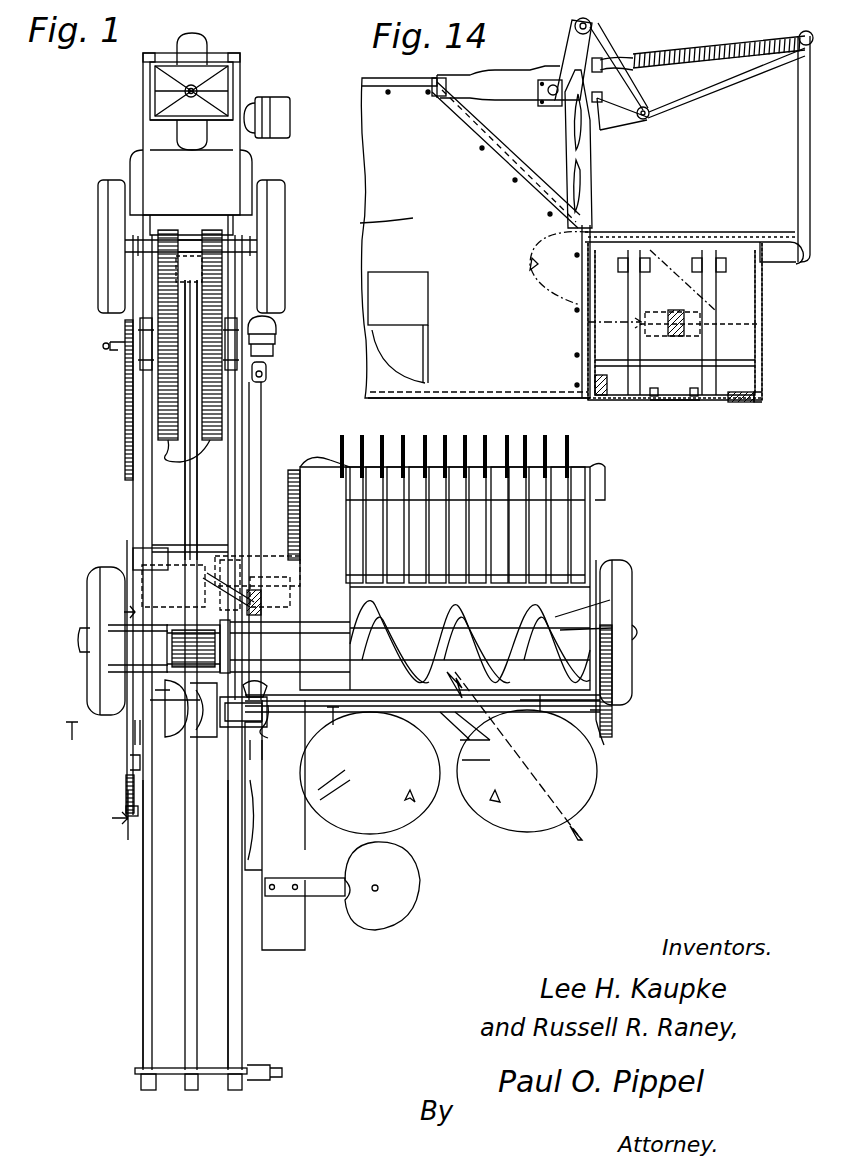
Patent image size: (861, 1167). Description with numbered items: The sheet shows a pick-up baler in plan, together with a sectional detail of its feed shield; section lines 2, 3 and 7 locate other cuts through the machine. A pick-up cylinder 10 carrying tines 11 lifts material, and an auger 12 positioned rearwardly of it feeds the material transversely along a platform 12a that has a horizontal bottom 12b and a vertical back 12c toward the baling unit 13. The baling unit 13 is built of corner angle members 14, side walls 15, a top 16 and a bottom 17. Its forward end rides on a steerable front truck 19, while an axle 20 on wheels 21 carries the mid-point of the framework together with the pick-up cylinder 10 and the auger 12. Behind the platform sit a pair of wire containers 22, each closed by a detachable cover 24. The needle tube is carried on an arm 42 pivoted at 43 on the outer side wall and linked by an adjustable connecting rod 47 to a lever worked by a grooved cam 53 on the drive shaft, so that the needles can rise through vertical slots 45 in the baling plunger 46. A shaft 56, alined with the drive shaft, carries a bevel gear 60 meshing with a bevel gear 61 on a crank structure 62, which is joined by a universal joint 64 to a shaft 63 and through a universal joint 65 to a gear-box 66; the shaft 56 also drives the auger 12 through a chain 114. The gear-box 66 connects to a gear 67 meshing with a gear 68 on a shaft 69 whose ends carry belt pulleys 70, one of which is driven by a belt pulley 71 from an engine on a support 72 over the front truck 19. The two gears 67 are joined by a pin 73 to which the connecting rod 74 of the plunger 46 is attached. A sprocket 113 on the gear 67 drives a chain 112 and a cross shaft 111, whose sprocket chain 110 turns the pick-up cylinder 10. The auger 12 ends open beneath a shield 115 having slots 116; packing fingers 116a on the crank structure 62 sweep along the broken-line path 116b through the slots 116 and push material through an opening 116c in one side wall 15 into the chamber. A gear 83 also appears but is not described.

In FIG. 1, the section line 2 is at (115, 723).
In FIG. 1, the section line 3 is at (202, 734).
In FIG. 1, the section line 7 is at (516, 757).
In FIG. 1, the pick-up cylinder 10 is at (587, 455).
In FIG. 1, the tines 11 is at (465, 435).
In FIG. 1, the auger 12 is at (465, 628).
In FIG. 1, the platform 12a is at (583, 608).
In FIG. 14, the platform 12a is at (372, 200).
In FIG. 1, the horizontal bottom 12b is at (620, 625).
In FIG. 14, the horizontal bottom 12b is at (455, 396).
In FIG. 1, the vertical back 12c is at (512, 695).
In FIG. 14, the vertical back 12c is at (415, 215).
In FIG. 1, the baling unit 13 is at (162, 513).
In FIG. 1, the corner angle members 14 is at (150, 958).
In FIG. 14, the corner angle members 14 is at (766, 266).
In FIG. 14, the side walls 15 is at (760, 335).
In FIG. 1, the top 16 is at (130, 596).
In FIG. 14, the top 16 is at (733, 235).
In FIG. 14, the bottom 17 is at (685, 400).
In FIG. 1, the steerable front truck 19 is at (210, 50).
In FIG. 1, the axle 20 is at (76, 640).
In FIG. 1, the wheels 21 is at (88, 676).
In FIG. 1, the containers 22 is at (455, 828).
In FIG. 1, the detachable cover 24 is at (395, 815).
In FIG. 1, the arm 42 is at (126, 790).
In FIG. 1, the pivot 43 is at (130, 816).
In FIG. 1, the vertical slots 45 is at (128, 565).
In FIG. 1, the baling plunger 46 is at (148, 548).
In FIG. 14, the baling plunger 46 is at (735, 305).
In FIG. 1, the adjustable connecting rod 47 is at (130, 766).
In FIG. 1, the cam 53 is at (134, 745).
In FIG. 1, the shaft 56 is at (520, 700).
In FIG. 1, the bevel gear 60 is at (254, 720).
In FIG. 1, the bevel gear 61 is at (268, 690).
In FIG. 1, the crank structure 62 is at (242, 660).
In FIG. 14, the crank structure 62 is at (540, 54).
In FIG. 1, the shaft 63 is at (260, 456).
In FIG. 1, the universal joint 64 is at (258, 600).
In FIG. 1, the universal joint 65 is at (268, 374).
In FIG. 1, the gear-box 66 is at (273, 340).
In FIG. 1, the gear 67 is at (184, 457).
In FIG. 1, the gear 68 is at (164, 232).
In FIG. 1, the shaft 69 is at (190, 240).
In FIG. 1, the belt pulleys 70 is at (104, 182).
In FIG. 1, the belt pulley 71 is at (282, 110).
In FIG. 1, the support 72 is at (228, 78).
In FIG. 1, the pin 73 is at (189, 265).
In FIG. 1, the connecting rod 74 is at (192, 490).
In FIG. 14, the connecting rod 74 is at (670, 312).
In FIG. 1, the gear 83 is at (185, 718).
In FIG. 1, the sprocket chain 110 is at (268, 548).
In FIG. 1, the cross shaft 111 is at (268, 588).
In FIG. 1, the chain 112 is at (133, 518).
In FIG. 1, the sprocket 113 is at (122, 350).
In FIG. 1, the chain 114 is at (620, 660).
In FIG. 1, the shield 115 is at (355, 605).
In FIG. 14, the shield 115 is at (460, 74).
In FIG. 1, the slots 116 is at (280, 660).
In FIG. 1, the packing fingers 116a is at (193, 636).
In FIG. 14, the packing fingers 116a is at (592, 190).
In FIG. 1, the broken line 116b is at (173, 685).
In FIG. 14, the broken line 116b is at (542, 282).
In FIG. 14, the opening 116c is at (582, 320).